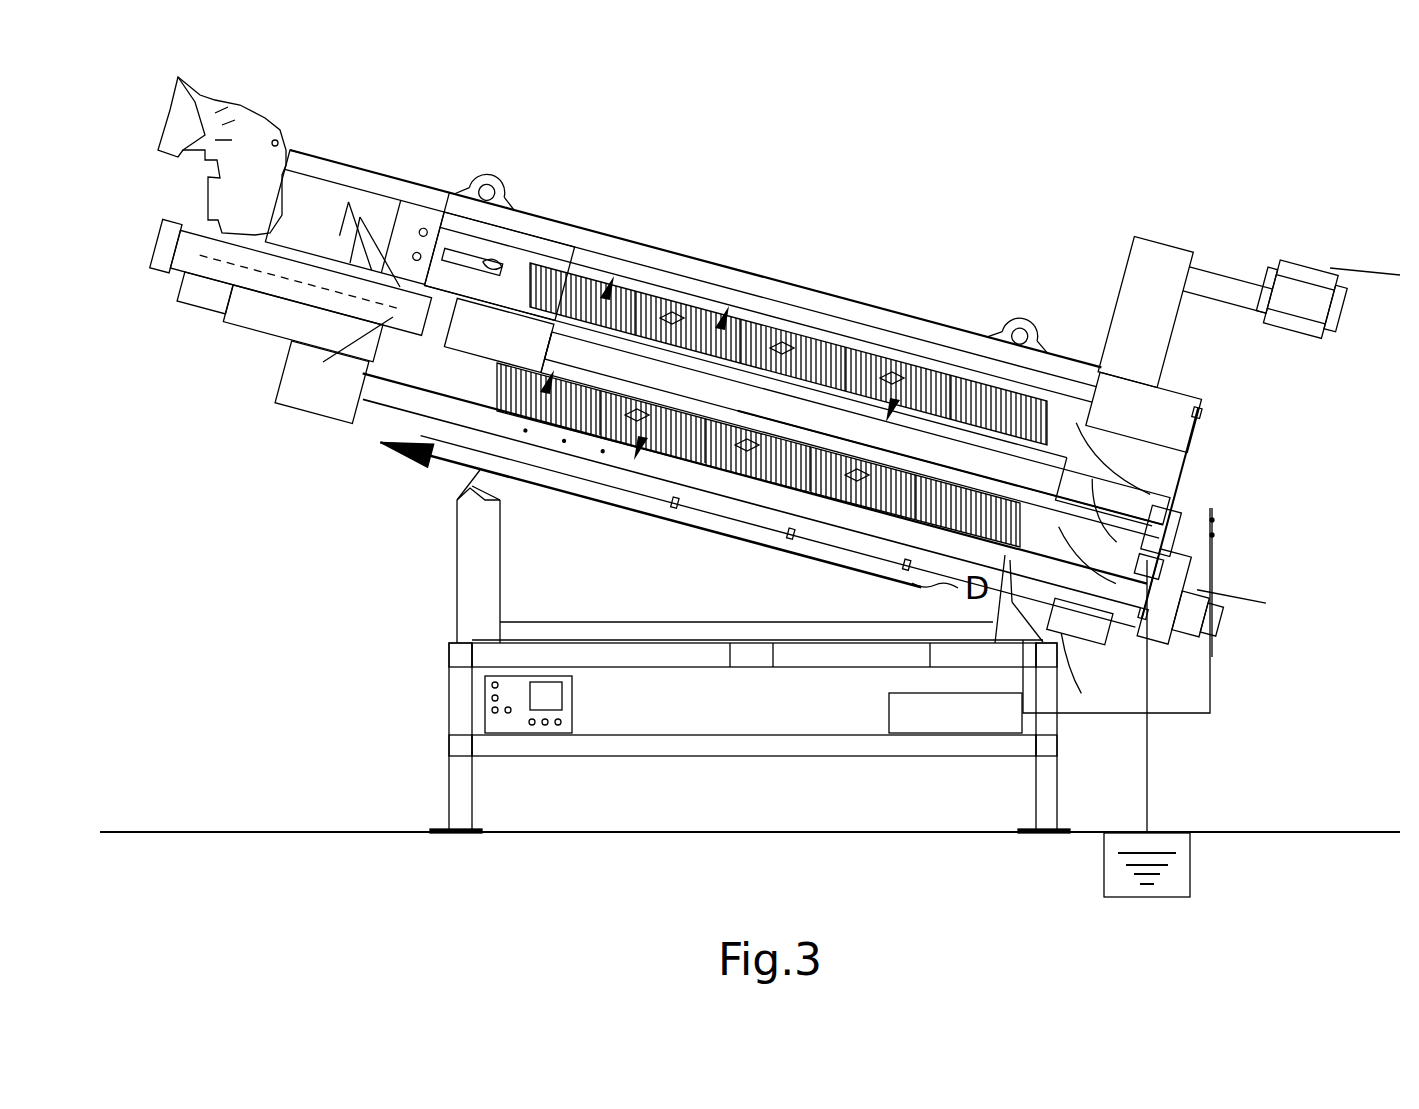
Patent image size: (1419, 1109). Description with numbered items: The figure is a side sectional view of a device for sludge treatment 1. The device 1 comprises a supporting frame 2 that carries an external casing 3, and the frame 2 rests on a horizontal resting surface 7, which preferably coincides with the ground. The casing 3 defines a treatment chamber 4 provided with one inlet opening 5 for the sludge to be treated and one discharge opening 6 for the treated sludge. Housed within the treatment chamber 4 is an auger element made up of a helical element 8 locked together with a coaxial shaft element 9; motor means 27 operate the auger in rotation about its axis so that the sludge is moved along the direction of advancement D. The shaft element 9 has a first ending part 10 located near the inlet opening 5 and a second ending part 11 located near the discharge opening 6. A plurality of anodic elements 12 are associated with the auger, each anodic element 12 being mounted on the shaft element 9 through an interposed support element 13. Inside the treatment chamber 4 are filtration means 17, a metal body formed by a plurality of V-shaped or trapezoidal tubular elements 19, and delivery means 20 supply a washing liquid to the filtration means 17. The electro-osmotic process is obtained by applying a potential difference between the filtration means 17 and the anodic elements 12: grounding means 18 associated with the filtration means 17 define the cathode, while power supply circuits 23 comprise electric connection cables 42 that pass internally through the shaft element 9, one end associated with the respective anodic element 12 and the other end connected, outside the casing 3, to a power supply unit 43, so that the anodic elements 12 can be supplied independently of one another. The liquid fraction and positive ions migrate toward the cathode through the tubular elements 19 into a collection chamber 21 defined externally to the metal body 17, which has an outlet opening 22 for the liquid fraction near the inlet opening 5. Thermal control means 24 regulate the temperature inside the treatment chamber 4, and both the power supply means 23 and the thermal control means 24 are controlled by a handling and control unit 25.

The device for sludge treatment 1 is at (1295, 125).
The supporting frame 2 is at (447, 735).
The external casing 3 is at (753, 260).
The treatment chamber 4 is at (497, 275).
The inlet opening 5 is at (1325, 320).
The discharge opening 6 is at (315, 388).
The horizontal resting surface 7 is at (205, 832).
The helical element 8 is at (548, 265).
The shaft element 9 is at (1135, 470).
The first ending part 10 is at (1185, 468).
The second ending part 11 is at (445, 272).
The anodic element 12 is at (602, 295).
The support element 13 is at (830, 350).
The filtration means 17 is at (1003, 567).
The grounding means 18 is at (1150, 810).
The tubular elements 19 is at (935, 405).
The delivery means 20 is at (690, 310).
The collection chamber 21 is at (1140, 612).
The outlet opening 22 is at (1097, 628).
The power supply circuits 23 is at (1215, 545).
The thermal control means 24 is at (543, 430).
The handling and control unit 25 is at (513, 718).
The motor means 27 is at (287, 118).
The electric connection cables 42 is at (1195, 415).
The power supply unit 43 is at (922, 707).